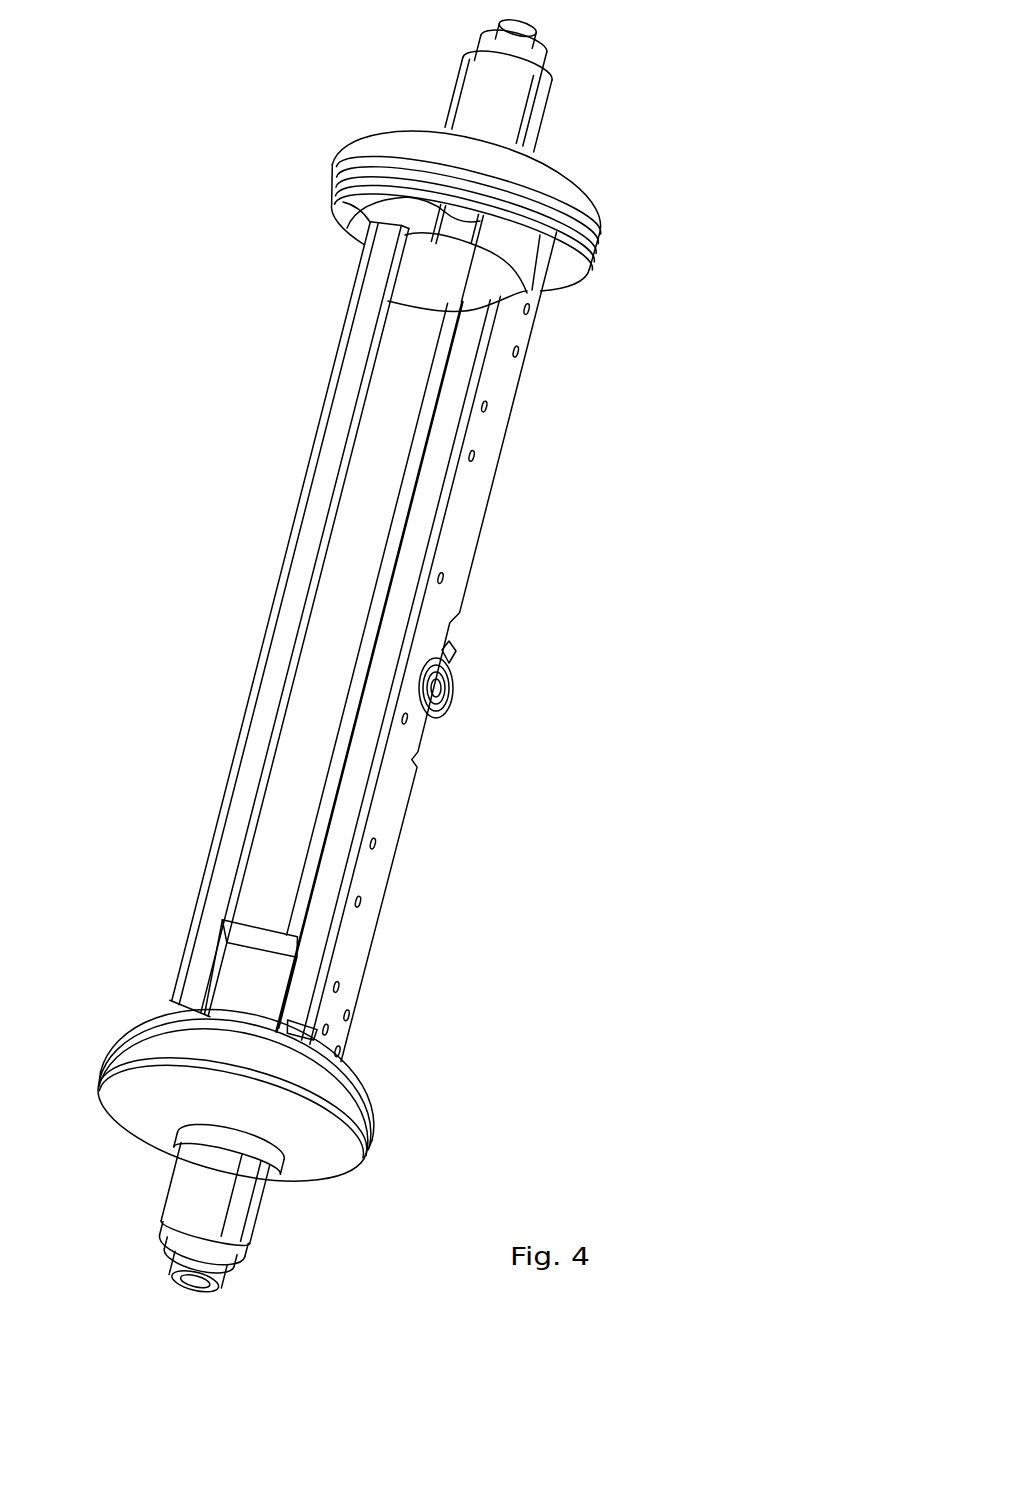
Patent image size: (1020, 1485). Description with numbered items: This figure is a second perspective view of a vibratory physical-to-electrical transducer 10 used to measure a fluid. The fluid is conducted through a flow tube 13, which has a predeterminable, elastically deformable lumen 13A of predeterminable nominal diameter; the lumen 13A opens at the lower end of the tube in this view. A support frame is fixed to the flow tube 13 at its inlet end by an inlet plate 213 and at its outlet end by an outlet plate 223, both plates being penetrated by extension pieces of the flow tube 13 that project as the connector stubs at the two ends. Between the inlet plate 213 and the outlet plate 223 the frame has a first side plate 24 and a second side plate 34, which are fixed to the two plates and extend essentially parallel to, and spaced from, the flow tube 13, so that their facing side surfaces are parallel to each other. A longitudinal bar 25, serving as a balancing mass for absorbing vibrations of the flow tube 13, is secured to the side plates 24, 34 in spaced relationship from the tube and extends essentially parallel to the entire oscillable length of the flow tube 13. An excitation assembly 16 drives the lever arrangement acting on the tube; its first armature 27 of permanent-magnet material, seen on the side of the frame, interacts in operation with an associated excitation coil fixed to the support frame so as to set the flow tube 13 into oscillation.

The transducer 10 is at (403, 67).
The flow tube 13 is at (487, 217).
The lumen 13A is at (195, 1299).
The outlet plate 223 is at (460, 287).
The longitudinal bar 25 is at (417, 375).
The second side plate 34 is at (313, 500).
The first side plate 24 is at (433, 495).
The first armature 27 is at (452, 680).
The excitation assembly 16 is at (500, 697).
The inlet plate 213 is at (270, 988).